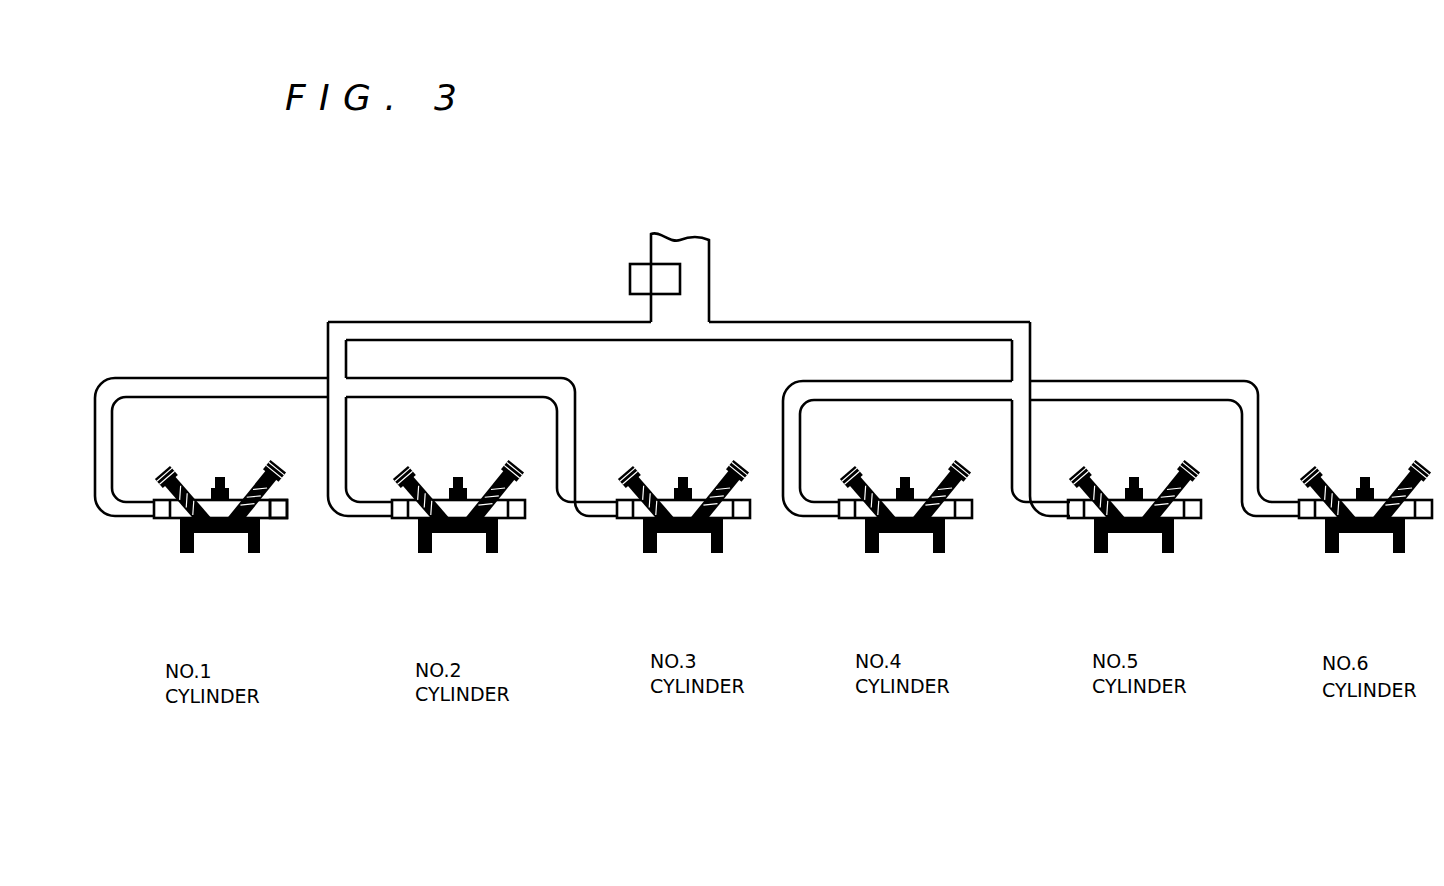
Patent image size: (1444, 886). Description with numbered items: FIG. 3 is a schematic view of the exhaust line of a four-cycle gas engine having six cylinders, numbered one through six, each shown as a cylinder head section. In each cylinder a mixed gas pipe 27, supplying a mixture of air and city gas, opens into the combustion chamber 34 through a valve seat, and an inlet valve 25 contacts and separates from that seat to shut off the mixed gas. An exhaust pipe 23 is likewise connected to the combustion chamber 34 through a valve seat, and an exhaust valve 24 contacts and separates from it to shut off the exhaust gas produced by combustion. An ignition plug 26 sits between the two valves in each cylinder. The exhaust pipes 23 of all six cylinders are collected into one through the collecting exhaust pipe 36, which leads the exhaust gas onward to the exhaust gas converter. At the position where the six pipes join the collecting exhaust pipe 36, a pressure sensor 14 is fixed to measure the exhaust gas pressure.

The pressure sensor 14 is at (644, 268).
The collecting exhaust pipe 36 is at (702, 288).
The exhaust pipe 23 is at (209, 556).
The exhaust valve 24 is at (184, 471).
The inlet valve 25 is at (266, 476).
The ignition plug 26 is at (234, 457).
The mixed gas pipe 27 is at (288, 558).
The combustion chamber 34 is at (220, 573).